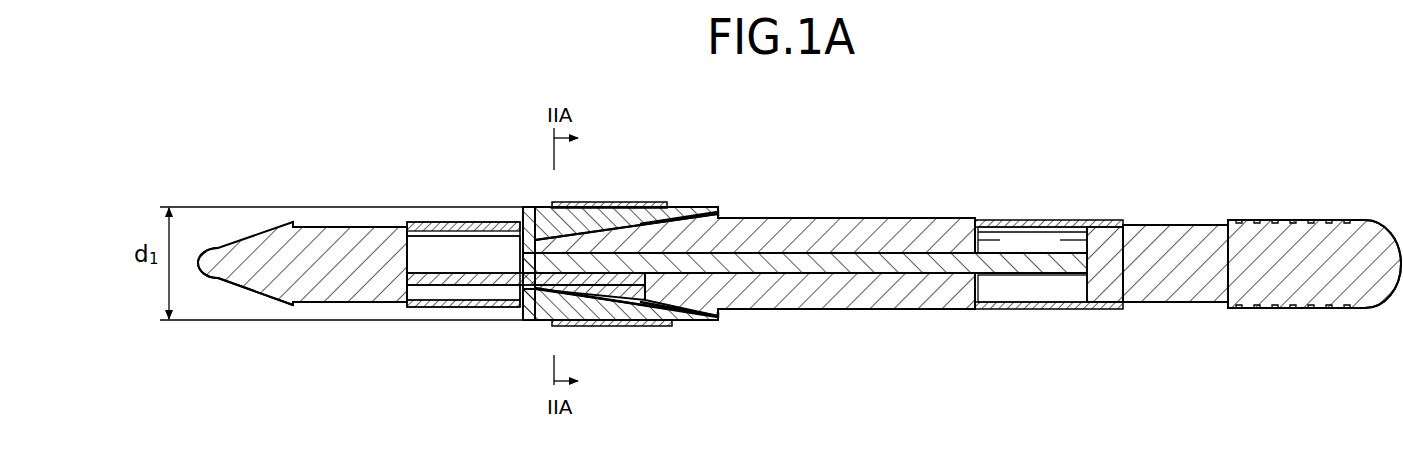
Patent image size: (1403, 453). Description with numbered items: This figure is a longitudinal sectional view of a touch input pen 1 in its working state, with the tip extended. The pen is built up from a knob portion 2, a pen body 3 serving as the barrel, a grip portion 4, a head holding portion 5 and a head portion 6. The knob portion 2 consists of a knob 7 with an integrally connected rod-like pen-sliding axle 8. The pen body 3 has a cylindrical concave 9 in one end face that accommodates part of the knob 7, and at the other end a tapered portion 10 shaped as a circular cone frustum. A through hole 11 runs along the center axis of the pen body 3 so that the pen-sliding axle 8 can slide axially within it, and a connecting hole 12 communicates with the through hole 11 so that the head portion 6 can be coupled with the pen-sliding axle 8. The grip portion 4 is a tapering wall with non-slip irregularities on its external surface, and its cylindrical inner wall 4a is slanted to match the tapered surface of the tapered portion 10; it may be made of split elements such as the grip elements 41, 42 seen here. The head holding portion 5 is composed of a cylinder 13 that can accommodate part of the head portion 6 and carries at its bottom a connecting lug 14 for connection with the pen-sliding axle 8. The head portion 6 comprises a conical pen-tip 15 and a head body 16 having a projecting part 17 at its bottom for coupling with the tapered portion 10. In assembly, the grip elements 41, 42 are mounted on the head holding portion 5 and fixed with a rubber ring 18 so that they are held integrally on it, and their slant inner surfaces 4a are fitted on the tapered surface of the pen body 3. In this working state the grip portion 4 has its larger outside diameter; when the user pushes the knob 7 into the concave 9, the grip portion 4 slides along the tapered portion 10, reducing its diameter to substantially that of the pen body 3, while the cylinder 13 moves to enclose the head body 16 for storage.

The touch input pen 1 is at (900, 216).
The knob portion 2 is at (1294, 218).
The pen body 3 is at (838, 216).
The grip portion 4 is at (706, 203).
The split grip element 41 is at (663, 204).
The split grip element 42 is at (665, 322).
The cylindrical inner wall 4a is at (718, 212).
The head holding portion 5 is at (428, 222).
The head portion 6 is at (332, 222).
The knob 7 is at (1304, 306).
The pen-sliding axle 8 is at (1069, 268).
The cylindrical concave 9 is at (1010, 295).
The tapered portion 10 is at (615, 292).
The through hole 11 is at (877, 268).
The connecting hole 12 is at (650, 282).
The cylinder 13 is at (472, 222).
The connecting lug 14 is at (521, 258).
The conical pen-tip 15 is at (227, 258).
The head body 16 is at (325, 293).
The projecting part 17 is at (432, 273).
The rubber ring 18 is at (585, 204).